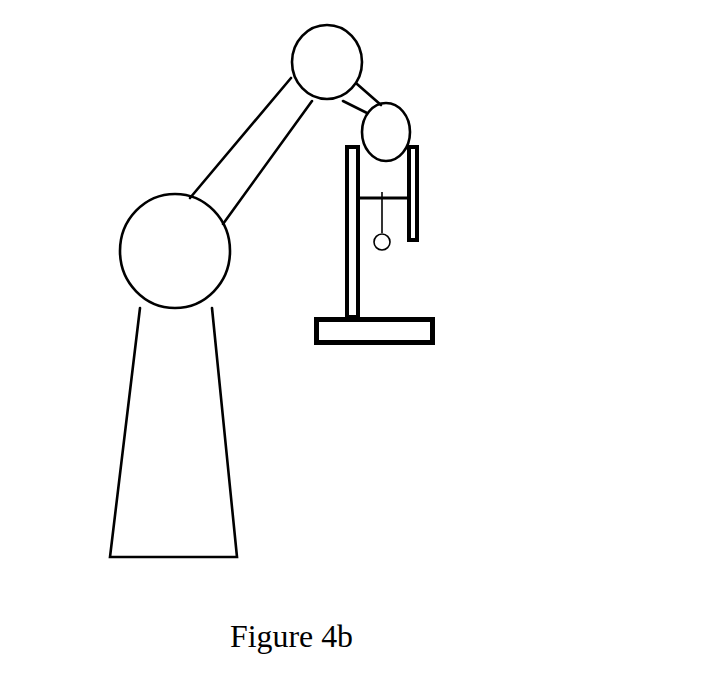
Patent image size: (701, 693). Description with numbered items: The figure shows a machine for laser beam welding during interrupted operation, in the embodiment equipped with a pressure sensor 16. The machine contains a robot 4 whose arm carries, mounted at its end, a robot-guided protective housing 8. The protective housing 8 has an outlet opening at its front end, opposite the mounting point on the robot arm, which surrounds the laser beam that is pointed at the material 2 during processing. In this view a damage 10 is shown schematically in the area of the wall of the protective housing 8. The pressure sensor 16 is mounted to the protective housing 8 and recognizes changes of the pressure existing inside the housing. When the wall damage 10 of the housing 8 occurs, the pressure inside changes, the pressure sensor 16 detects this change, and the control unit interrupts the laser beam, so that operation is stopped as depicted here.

The material 2 is at (362, 328).
The robot 4 is at (170, 432).
The protective housing 8 is at (353, 222).
The damage 10 is at (412, 278).
The pressure sensor 16 is at (384, 221).